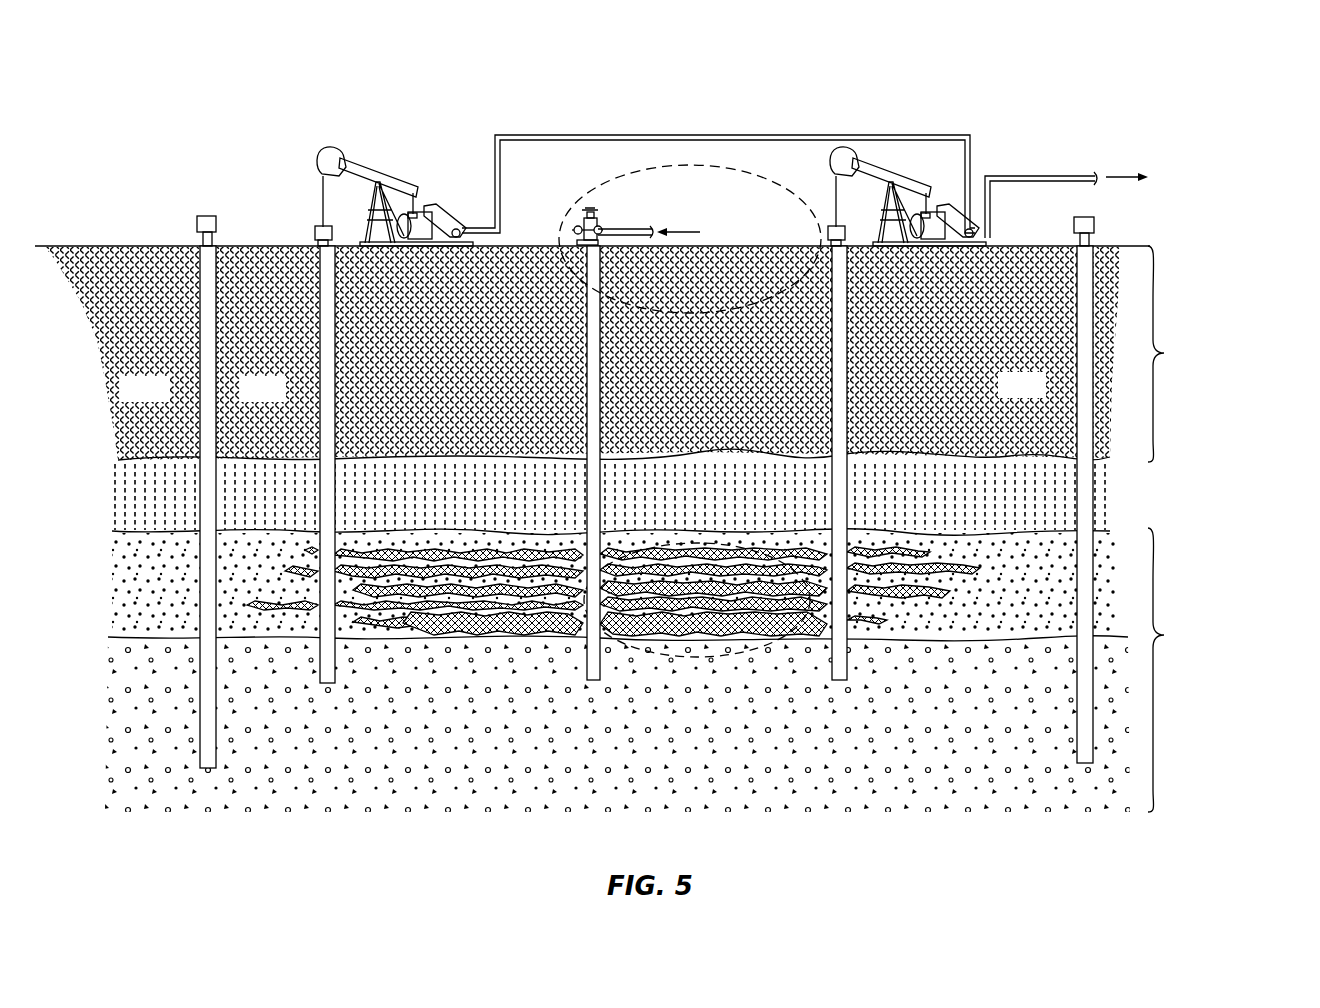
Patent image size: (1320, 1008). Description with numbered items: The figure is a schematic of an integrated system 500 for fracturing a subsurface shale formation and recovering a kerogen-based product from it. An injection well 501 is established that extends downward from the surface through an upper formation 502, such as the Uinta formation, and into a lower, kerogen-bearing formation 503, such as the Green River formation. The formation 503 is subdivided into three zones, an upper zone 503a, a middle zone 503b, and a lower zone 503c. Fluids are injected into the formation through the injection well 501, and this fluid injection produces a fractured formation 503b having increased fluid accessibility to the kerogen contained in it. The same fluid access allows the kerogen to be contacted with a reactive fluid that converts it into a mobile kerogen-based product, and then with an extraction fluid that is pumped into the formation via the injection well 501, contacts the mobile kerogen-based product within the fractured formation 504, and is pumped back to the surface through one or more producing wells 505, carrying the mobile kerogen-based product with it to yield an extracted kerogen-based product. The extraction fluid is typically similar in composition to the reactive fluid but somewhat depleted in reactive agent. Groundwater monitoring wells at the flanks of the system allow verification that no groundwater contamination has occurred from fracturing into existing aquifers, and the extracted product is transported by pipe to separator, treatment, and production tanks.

The integrated system 500 is at (1043, 66).
The injection well 501 is at (578, 202).
The formation 502 is at (628, 354).
The formation 503 is at (633, 626).
The zone 503a is at (120, 503).
The fractured formation 503b is at (120, 592).
The zone 503c is at (118, 733).
The fractured formation 504 is at (735, 657).
The producing well 505 is at (323, 367).